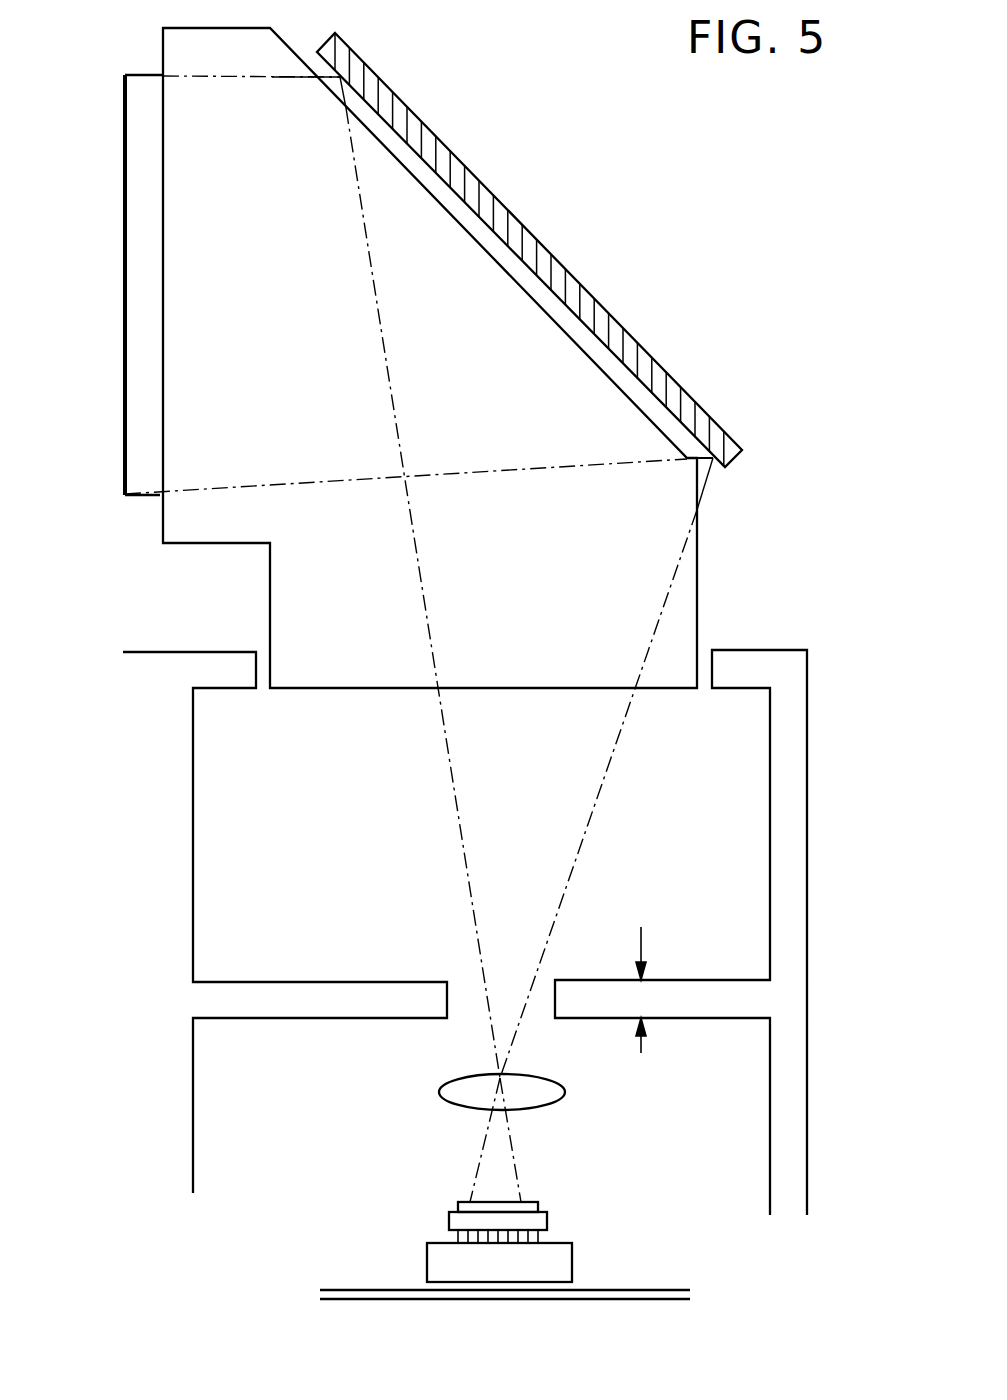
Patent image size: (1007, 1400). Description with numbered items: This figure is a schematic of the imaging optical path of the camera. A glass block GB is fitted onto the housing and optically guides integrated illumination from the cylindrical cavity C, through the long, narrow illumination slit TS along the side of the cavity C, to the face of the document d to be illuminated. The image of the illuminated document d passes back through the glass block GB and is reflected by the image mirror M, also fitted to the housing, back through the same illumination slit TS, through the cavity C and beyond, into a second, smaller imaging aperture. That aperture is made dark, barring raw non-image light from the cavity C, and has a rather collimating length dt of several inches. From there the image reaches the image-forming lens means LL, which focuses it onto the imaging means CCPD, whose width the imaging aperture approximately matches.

The document d is at (124, 242).
The glass block GB is at (635, 549).
The image mirror M is at (510, 217).
The cavity C is at (218, 830).
The illumination slit TS is at (468, 1007).
The collimating length dt is at (641, 974).
The image-forming lens means LL is at (565, 1092).
The imaging means CCPD is at (543, 1218).